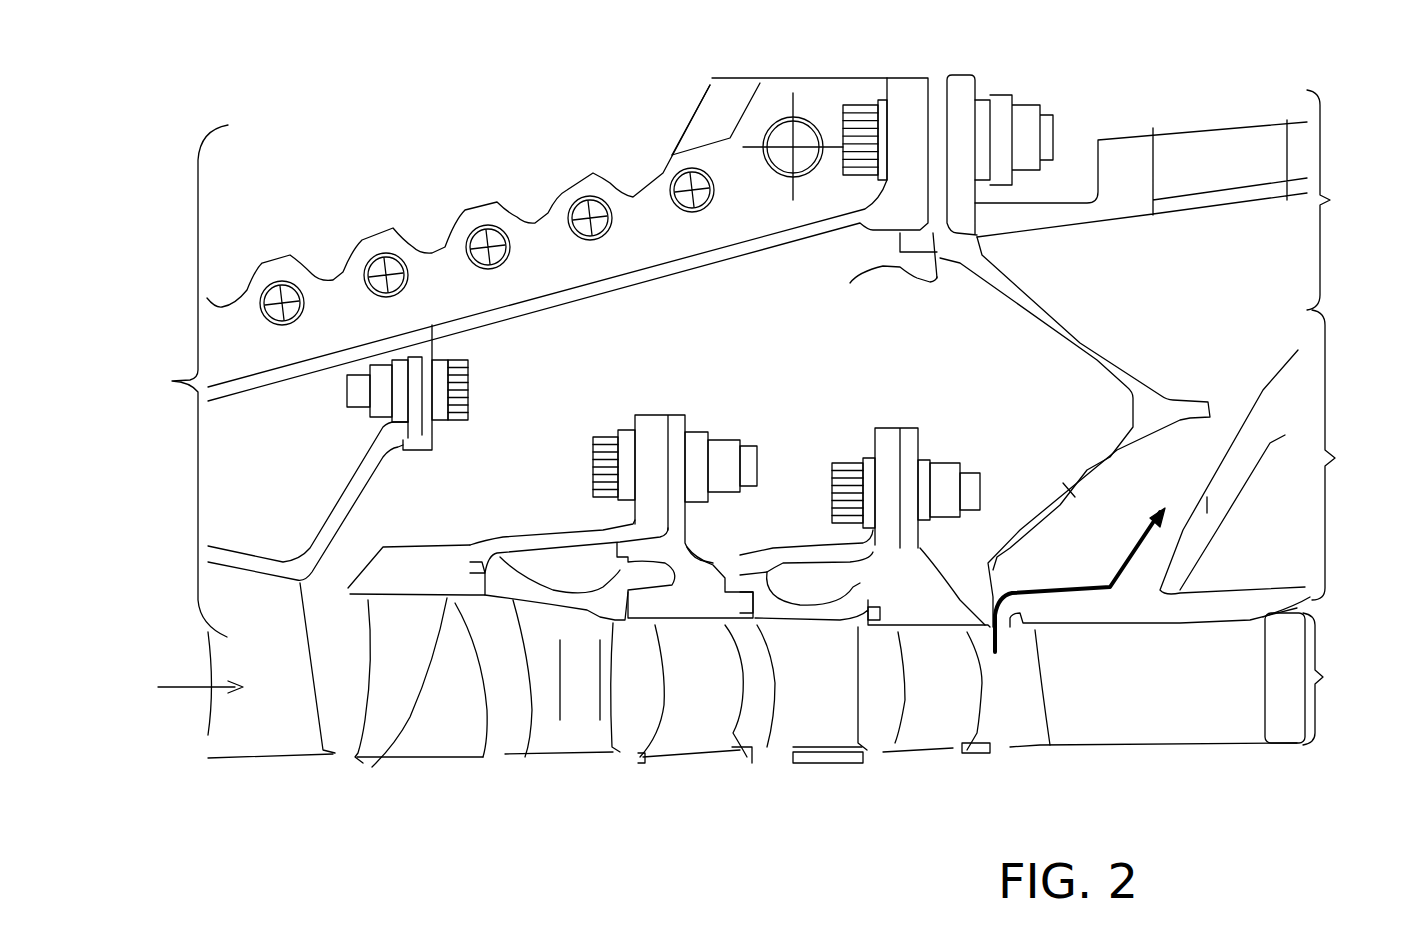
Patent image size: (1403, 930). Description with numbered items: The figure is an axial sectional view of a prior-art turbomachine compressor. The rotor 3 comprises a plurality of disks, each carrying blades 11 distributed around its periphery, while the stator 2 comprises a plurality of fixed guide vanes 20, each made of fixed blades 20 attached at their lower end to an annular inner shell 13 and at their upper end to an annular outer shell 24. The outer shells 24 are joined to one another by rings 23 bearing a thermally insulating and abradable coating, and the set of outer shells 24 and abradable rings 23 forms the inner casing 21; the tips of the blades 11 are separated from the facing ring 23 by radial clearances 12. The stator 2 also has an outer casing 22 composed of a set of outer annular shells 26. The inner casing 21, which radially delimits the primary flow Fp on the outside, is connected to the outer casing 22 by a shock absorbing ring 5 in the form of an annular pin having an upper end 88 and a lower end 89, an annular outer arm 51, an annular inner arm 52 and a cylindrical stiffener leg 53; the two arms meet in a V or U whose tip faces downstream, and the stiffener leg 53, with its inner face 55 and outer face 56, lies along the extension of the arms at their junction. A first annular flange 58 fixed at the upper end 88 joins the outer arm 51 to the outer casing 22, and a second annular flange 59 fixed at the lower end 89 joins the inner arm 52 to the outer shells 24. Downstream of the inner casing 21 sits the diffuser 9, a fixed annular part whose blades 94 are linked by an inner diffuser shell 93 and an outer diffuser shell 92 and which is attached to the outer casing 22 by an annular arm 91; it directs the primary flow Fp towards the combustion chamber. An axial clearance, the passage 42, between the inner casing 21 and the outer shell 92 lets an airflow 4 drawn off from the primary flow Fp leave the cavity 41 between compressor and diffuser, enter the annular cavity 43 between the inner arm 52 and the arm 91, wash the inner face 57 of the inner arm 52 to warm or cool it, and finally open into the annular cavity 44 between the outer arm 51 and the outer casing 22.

The stator 2 is at (535, 357).
The rotor 3 is at (1305, 679).
The airflow 4 is at (1067, 593).
The shock absorbing ring 5 is at (1037, 310).
The diffuser 9 is at (1163, 727).
The blades 11 is at (450, 730).
The radial clearances 12 is at (450, 730).
The annular inner shell 13 is at (228, 773).
The fixed guide vanes 20 is at (590, 718).
The inner casing 21 is at (1344, 455).
The outer casing 22 is at (1173, 200).
The rings 23 is at (410, 563).
The annular outer shell 24 is at (852, 743).
The outer annular shells 26 is at (783, 93).
The cavity 41 is at (1032, 728).
The passage 42 is at (1008, 622).
The annular cavity 43 is at (1178, 503).
The annular cavity 44 is at (1215, 254).
The annular outer arm 51 is at (1112, 365).
The annular inner arm 52 is at (1080, 477).
The cylindrical stiffener leg 53 is at (1210, 400).
The inner face 55 is at (1180, 422).
The outer face 56 is at (1190, 400).
The inner face 57 is at (1112, 458).
The first annular flange 58 is at (932, 108).
The second annular flange 59 is at (907, 437).
The upper end 88 is at (860, 276).
The lower end 89 is at (967, 587).
The annular arm 91 is at (1207, 513).
The outer diffuser shell 92 is at (1223, 603).
The inner diffuser shell 93 is at (1173, 775).
The blades 94 is at (1207, 690).
The primary flow Fp is at (185, 687).